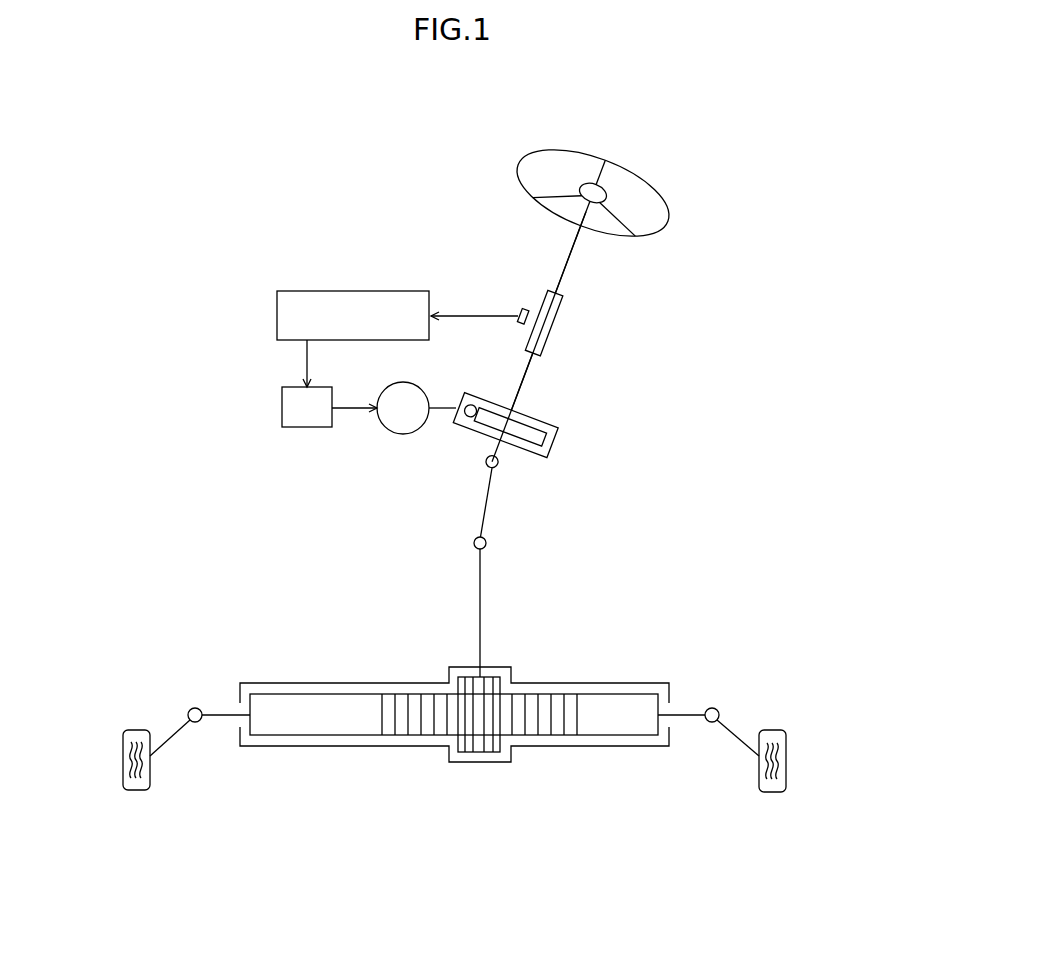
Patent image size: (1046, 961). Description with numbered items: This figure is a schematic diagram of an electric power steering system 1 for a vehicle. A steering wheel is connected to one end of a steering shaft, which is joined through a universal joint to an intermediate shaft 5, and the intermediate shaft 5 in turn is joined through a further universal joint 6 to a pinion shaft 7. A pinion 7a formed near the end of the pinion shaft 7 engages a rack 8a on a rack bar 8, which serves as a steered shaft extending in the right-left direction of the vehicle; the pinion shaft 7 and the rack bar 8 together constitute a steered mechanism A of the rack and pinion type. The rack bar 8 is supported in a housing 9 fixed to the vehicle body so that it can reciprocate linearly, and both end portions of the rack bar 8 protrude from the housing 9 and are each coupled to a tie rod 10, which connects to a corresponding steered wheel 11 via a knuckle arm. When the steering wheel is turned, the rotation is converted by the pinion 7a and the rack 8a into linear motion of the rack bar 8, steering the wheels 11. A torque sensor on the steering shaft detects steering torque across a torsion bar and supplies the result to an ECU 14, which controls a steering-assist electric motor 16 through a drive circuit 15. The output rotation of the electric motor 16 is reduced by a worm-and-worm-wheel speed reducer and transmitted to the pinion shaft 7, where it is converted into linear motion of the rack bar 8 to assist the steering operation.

The electric power steering system 1 is at (685, 148).
The intermediate shaft 5 is at (488, 505).
The universal joint 6 is at (487, 543).
The pinion shaft 7 is at (491, 631).
The pinion 7a is at (488, 752).
The rack bar 8 is at (543, 743).
The rack 8a is at (428, 727).
The housing 9 is at (370, 683).
The tie rod 10 is at (178, 733).
The steered wheel 11 is at (138, 792).
The ECU 14 is at (303, 291).
The drive circuit 15 is at (282, 410).
The electric motor 16 is at (405, 434).
The steered mechanism A is at (516, 768).